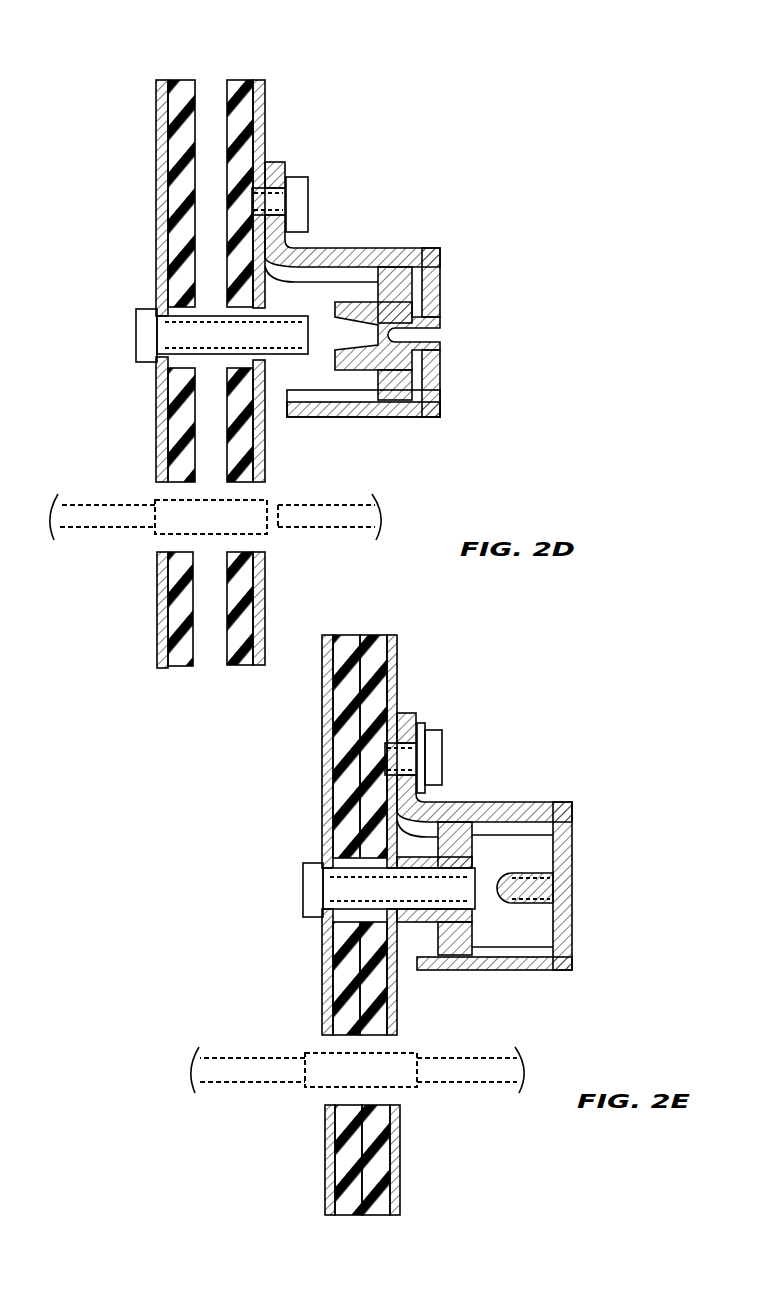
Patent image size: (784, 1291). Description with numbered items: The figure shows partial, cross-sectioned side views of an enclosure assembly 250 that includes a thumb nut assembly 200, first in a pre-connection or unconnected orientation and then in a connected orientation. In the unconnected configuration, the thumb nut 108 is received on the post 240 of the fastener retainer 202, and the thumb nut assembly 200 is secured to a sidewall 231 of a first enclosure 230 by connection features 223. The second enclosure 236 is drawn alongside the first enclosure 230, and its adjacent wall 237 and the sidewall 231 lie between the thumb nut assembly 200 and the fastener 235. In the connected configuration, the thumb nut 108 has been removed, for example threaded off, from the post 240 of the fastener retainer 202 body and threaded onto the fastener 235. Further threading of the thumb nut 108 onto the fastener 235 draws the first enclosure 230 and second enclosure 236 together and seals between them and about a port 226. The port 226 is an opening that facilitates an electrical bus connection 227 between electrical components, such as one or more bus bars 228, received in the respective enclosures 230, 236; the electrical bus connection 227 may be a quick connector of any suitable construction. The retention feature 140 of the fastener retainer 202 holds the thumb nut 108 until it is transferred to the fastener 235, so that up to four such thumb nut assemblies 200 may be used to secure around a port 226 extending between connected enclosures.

In FIG. 2D, the thumb nut 108 is at (396, 260).
In FIG. 2E, the thumb nut 108 is at (457, 822).
In FIG. 2D, the clamp member 140 is at (398, 348).
In FIG. 2D, the thumb nut assembly 200 is at (441, 240).
In FIG. 2E, the thumb nut assembly 200 is at (573, 800).
In FIG. 2D, the fastener retainer 202 is at (443, 292).
In FIG. 2E, the fastener retainer 202 is at (575, 853).
In FIG. 2D, the connection feature 223 is at (287, 160).
In FIG. 2E, the port 226 is at (303, 1040).
In FIG. 2D, the electrical bus connection 227 is at (155, 536).
In FIG. 2E, the electrical bus connection 227 is at (313, 1090).
In FIG. 2D, the bus bars 228 is at (75, 530).
In FIG. 2E, the bus bars 228 is at (215, 1082).
In FIG. 2D, the first enclosure 230 is at (251, 78).
In FIG. 2E, the first enclosure 230 is at (392, 633).
In FIG. 2D, the sidewall 231 is at (266, 96).
In FIG. 2D, the fastener 235 is at (135, 335).
In FIG. 2E, the fastener 235 is at (302, 890).
In FIG. 2D, the second enclosure 236 is at (178, 78).
In FIG. 2E, the second enclosure 236 is at (328, 633).
In FIG. 2D, the panel frame 237 is at (156, 100).
In FIG. 2E, the post 240 is at (532, 905).
In FIG. 2D, the enclosure assembly 250 is at (421, 112).
In FIG. 2E, the enclosure assembly 250 is at (527, 688).